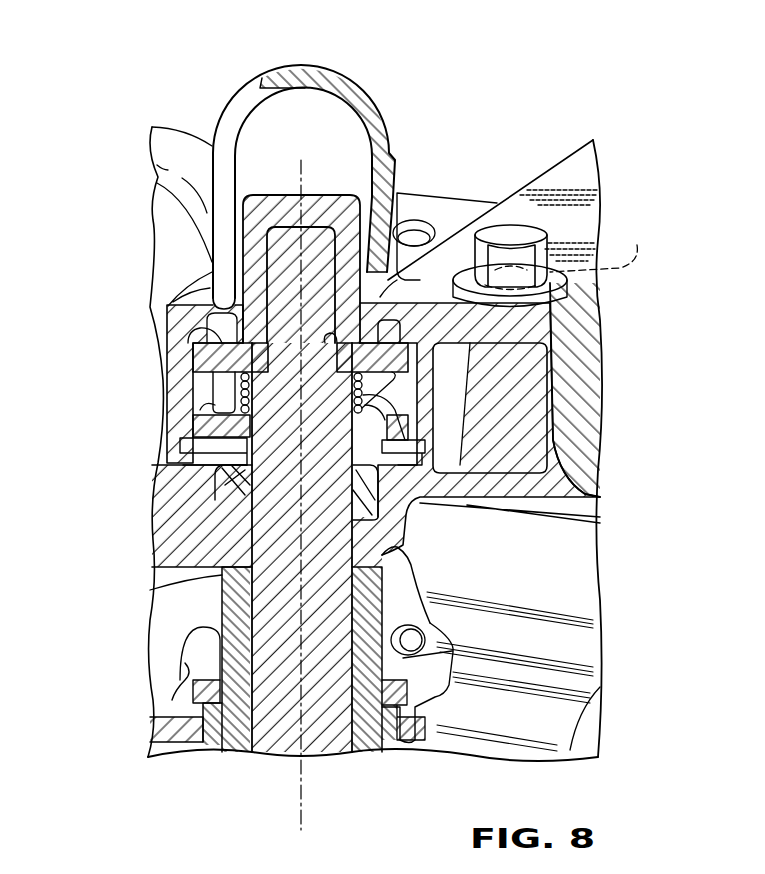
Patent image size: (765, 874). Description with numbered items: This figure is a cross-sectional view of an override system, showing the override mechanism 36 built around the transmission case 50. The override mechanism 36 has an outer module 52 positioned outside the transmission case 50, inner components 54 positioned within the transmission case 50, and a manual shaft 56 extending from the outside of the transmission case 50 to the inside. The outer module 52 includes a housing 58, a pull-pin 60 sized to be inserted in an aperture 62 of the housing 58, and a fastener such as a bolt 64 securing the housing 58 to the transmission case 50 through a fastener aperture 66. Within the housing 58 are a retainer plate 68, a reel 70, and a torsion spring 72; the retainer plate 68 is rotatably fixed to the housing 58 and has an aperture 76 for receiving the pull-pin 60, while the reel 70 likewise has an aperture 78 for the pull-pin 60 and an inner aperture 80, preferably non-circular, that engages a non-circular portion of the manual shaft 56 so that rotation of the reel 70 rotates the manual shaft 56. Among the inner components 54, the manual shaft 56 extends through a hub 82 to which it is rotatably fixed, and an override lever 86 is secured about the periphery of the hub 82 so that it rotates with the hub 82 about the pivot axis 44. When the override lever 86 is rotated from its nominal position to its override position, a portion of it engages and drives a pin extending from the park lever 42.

The override mechanism 36 is at (222, 78).
The park lever 42 is at (168, 713).
The pivot axis 44 is at (301, 815).
The transmission case 50 is at (152, 513).
The outer module 52 is at (122, 288).
The inner components 54 is at (122, 626).
The manual shaft 56 is at (278, 533).
The housing 58 is at (442, 307).
The pull-pin 60 is at (385, 112).
The aperture 62 is at (178, 306).
The bolt 64 is at (512, 233).
The fastener aperture 66 is at (569, 254).
The retainer plate 68 is at (233, 468).
The reel 70 is at (230, 358).
The torsion spring 72 is at (240, 392).
The aperture 76 is at (218, 428).
The aperture 78 is at (183, 338).
The inner aperture 80 is at (278, 338).
The hub 82 is at (237, 700).
The override lever 86 is at (203, 648).